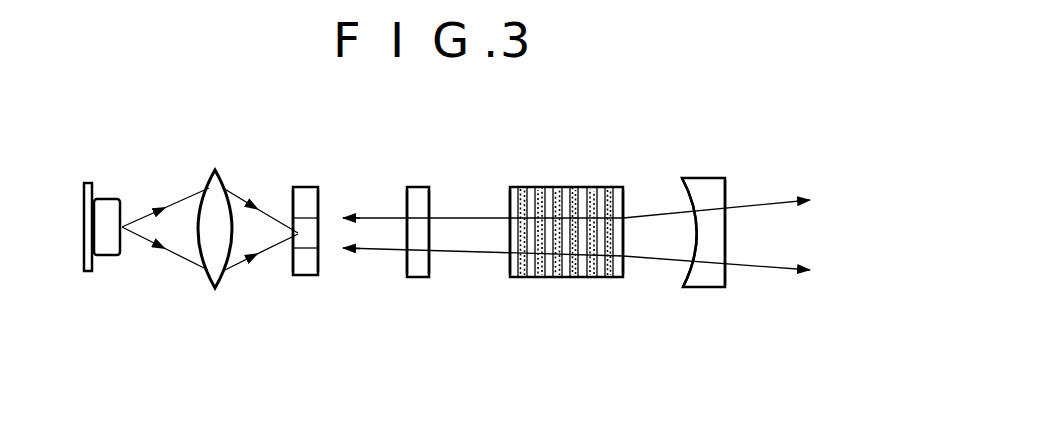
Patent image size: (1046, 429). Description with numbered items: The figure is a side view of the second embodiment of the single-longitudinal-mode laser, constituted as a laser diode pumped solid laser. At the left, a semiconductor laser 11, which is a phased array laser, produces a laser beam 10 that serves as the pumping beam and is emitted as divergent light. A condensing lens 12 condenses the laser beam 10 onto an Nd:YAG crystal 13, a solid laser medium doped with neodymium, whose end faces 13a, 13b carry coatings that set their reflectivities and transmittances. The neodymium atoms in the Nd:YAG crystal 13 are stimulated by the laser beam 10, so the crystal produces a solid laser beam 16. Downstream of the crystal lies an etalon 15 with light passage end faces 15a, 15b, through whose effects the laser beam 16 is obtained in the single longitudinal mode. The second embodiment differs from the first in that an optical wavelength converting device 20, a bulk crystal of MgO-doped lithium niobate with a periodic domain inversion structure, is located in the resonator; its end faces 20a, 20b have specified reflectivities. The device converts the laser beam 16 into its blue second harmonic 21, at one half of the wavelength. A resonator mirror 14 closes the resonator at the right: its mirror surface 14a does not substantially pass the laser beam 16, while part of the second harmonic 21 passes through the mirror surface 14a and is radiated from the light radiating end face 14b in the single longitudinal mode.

The laser beam 10 is at (185, 192).
The semiconductor laser 11 is at (110, 198).
The condensing lens 12 is at (222, 188).
The Nd:YAG crystal 13 is at (313, 183).
The end face 13a is at (288, 263).
The end face 13b is at (320, 263).
The resonator mirror 14 is at (712, 165).
The mirror surface 14a is at (682, 272).
The light radiating end face 14b is at (730, 272).
The etalon 15 is at (422, 177).
The light passage end face 15a is at (402, 265).
The light passage end face 15b is at (437, 265).
The solid laser beam 16 is at (648, 212).
The optical wavelength converting device 20 is at (550, 178).
The end face 20a is at (510, 262).
The end face 20b is at (627, 263).
The second harmonic 21 is at (770, 200).